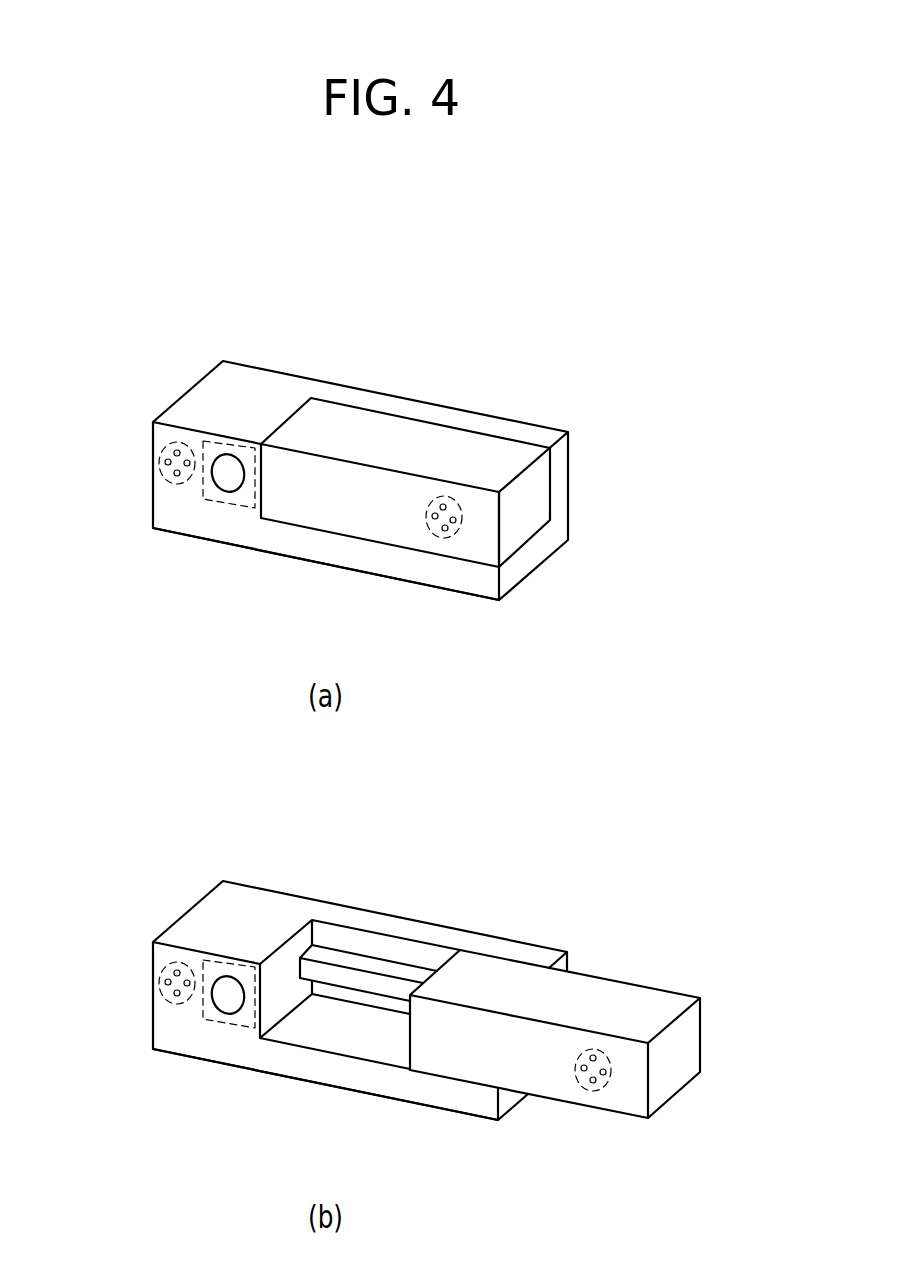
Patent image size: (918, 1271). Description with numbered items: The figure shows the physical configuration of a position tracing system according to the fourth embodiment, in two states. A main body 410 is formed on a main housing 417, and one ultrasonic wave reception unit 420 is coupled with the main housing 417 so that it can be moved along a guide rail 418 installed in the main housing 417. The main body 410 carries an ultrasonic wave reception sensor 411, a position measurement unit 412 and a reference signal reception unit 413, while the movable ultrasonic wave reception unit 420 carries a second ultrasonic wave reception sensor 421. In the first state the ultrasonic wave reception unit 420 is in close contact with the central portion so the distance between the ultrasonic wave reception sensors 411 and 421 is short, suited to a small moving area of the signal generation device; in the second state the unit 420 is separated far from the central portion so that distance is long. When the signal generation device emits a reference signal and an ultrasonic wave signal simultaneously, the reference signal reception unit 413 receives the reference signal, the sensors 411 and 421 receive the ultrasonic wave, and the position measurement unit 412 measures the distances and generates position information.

The main body 410 is at (216, 400).
The ultrasonic wave reception sensor 411 is at (162, 446).
The position measurement unit 412 is at (207, 503).
The reference signal reception unit 413 is at (225, 498).
The main housing 417 is at (403, 566).
The guide rail 418 is at (373, 980).
The ultrasonic wave reception unit 420 is at (405, 433).
The ultrasonic wave reception sensor 421 is at (462, 513).